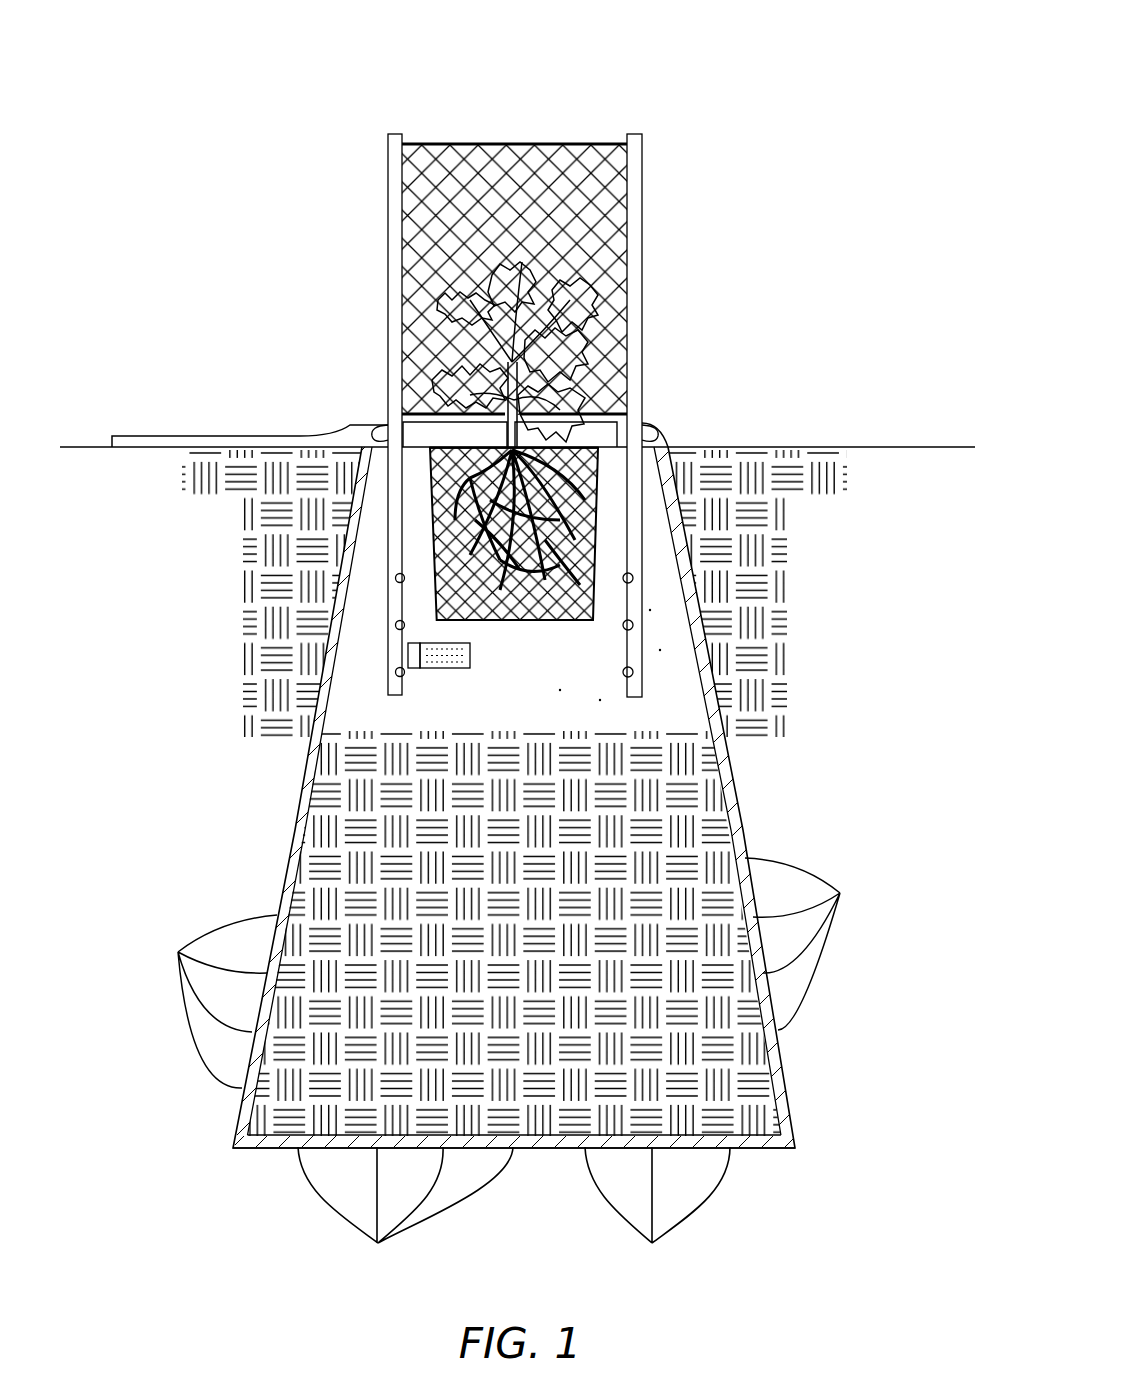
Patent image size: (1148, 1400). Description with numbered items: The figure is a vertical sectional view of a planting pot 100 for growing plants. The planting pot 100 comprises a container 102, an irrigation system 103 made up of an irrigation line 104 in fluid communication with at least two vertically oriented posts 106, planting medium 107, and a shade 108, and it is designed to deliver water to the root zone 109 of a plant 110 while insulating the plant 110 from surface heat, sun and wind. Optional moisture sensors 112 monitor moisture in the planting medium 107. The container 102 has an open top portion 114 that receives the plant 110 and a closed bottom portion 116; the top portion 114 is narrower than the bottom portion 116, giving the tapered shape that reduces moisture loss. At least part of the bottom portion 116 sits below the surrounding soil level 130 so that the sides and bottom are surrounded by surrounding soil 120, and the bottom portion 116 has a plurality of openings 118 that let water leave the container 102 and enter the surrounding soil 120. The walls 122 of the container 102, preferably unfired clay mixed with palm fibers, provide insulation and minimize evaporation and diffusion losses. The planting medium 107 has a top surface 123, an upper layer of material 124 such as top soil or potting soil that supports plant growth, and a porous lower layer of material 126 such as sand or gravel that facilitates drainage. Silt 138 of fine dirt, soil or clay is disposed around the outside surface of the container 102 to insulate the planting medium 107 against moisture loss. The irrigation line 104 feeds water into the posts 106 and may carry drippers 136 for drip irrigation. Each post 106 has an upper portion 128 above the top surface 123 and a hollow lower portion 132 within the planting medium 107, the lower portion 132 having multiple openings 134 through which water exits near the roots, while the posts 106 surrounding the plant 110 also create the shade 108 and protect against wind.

The planting pot 100 is at (728, 92).
The container 102 is at (517, 823).
The irrigation system 103 is at (242, 366).
The irrigation line 104 is at (199, 426).
The vertically oriented posts 106 is at (390, 342).
The planting medium 107 is at (370, 723).
The shade 108 is at (605, 208).
The root zone 109 is at (417, 483).
The plant 110 is at (505, 330).
The moisture sensors 112 is at (447, 668).
The top portion 114 is at (648, 421).
The bottom portion 116 is at (782, 1058).
The openings 118 is at (846, 1103).
The surrounding soil 120 is at (785, 520).
The walls 122 is at (517, 797).
The top surface 123 is at (588, 434).
The upper layer of material 124 is at (665, 645).
The lower layer of material 126 is at (753, 1147).
The upper portion 128 is at (464, 415).
The surrounding soil level 130 is at (595, 381).
The lower portion 132 is at (667, 604).
The openings 134 is at (396, 672).
The drippers 136 is at (372, 424).
The silt 138 is at (290, 830).